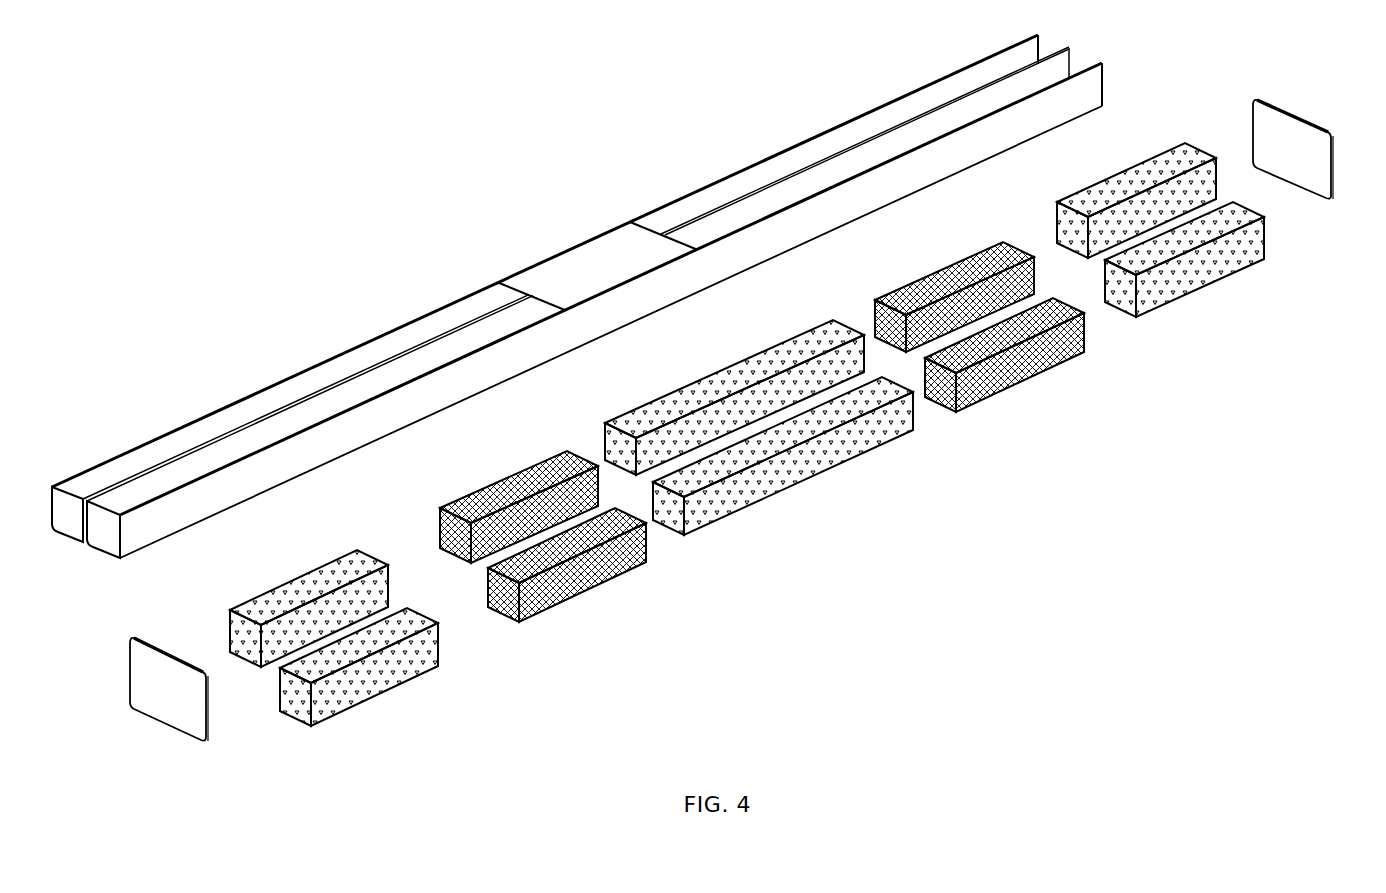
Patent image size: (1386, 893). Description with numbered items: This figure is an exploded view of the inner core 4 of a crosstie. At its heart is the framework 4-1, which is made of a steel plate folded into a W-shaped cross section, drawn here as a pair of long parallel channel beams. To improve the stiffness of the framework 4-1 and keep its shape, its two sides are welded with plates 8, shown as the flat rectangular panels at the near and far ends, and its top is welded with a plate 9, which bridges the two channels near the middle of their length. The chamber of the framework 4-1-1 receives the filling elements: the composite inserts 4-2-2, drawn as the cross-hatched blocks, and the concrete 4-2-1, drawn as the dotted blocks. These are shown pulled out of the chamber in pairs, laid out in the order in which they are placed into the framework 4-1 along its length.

The inner core 4 is at (332, 333).
The framework 4-1 is at (187, 423).
The chamber of the framework 4-1-1 is at (715, 228).
The plate 9 is at (598, 300).
The concrete 4-2-1 is at (387, 682).
The composite inserts 4-2-2 is at (595, 582).
The plates 8 is at (208, 702).